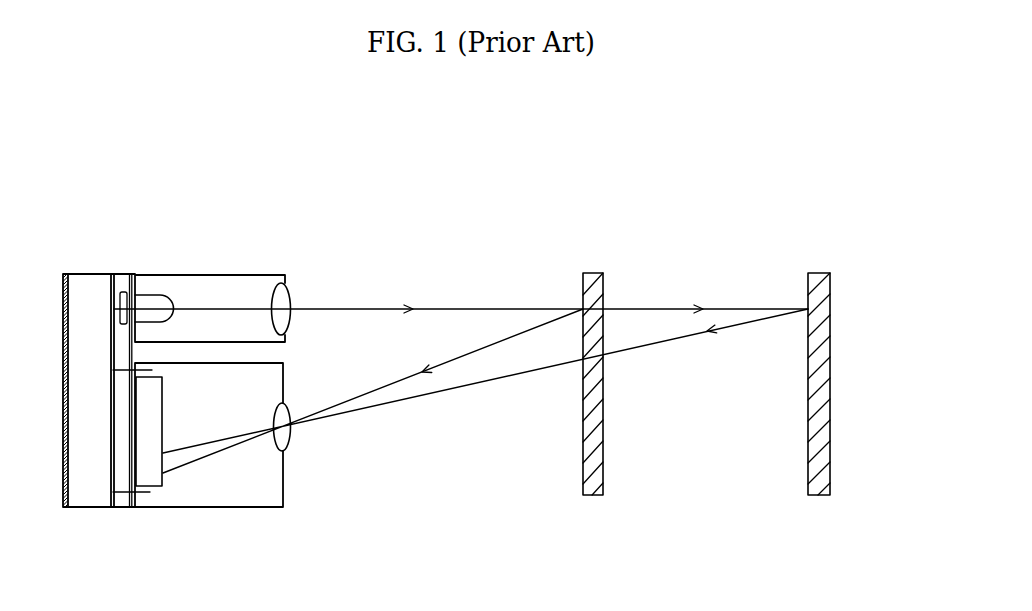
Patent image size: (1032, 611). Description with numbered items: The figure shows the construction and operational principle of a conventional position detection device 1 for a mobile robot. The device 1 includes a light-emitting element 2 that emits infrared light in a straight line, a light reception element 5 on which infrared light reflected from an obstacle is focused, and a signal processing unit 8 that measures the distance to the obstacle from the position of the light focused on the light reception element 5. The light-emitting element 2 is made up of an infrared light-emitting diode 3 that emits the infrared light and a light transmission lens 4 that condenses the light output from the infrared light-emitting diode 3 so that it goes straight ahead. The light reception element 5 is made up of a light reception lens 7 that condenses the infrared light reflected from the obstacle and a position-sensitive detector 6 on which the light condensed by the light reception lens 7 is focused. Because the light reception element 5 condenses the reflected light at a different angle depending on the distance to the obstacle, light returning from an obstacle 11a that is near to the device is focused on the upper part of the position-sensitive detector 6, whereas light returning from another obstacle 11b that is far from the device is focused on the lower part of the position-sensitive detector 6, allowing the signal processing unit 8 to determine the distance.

The position detection device 1 is at (428, 375).
The light-emitting element 2 is at (461, 244).
The infrared light-emitting diode 3 is at (158, 302).
The light transmission lens 4 is at (288, 297).
The light reception element 5 is at (222, 483).
The position-sensitive detector 6 is at (157, 458).
The light reception lens 7 is at (303, 474).
The signal processing unit 8 is at (100, 492).
The near obstacle 11a is at (606, 288).
The far obstacle 11b is at (833, 287).